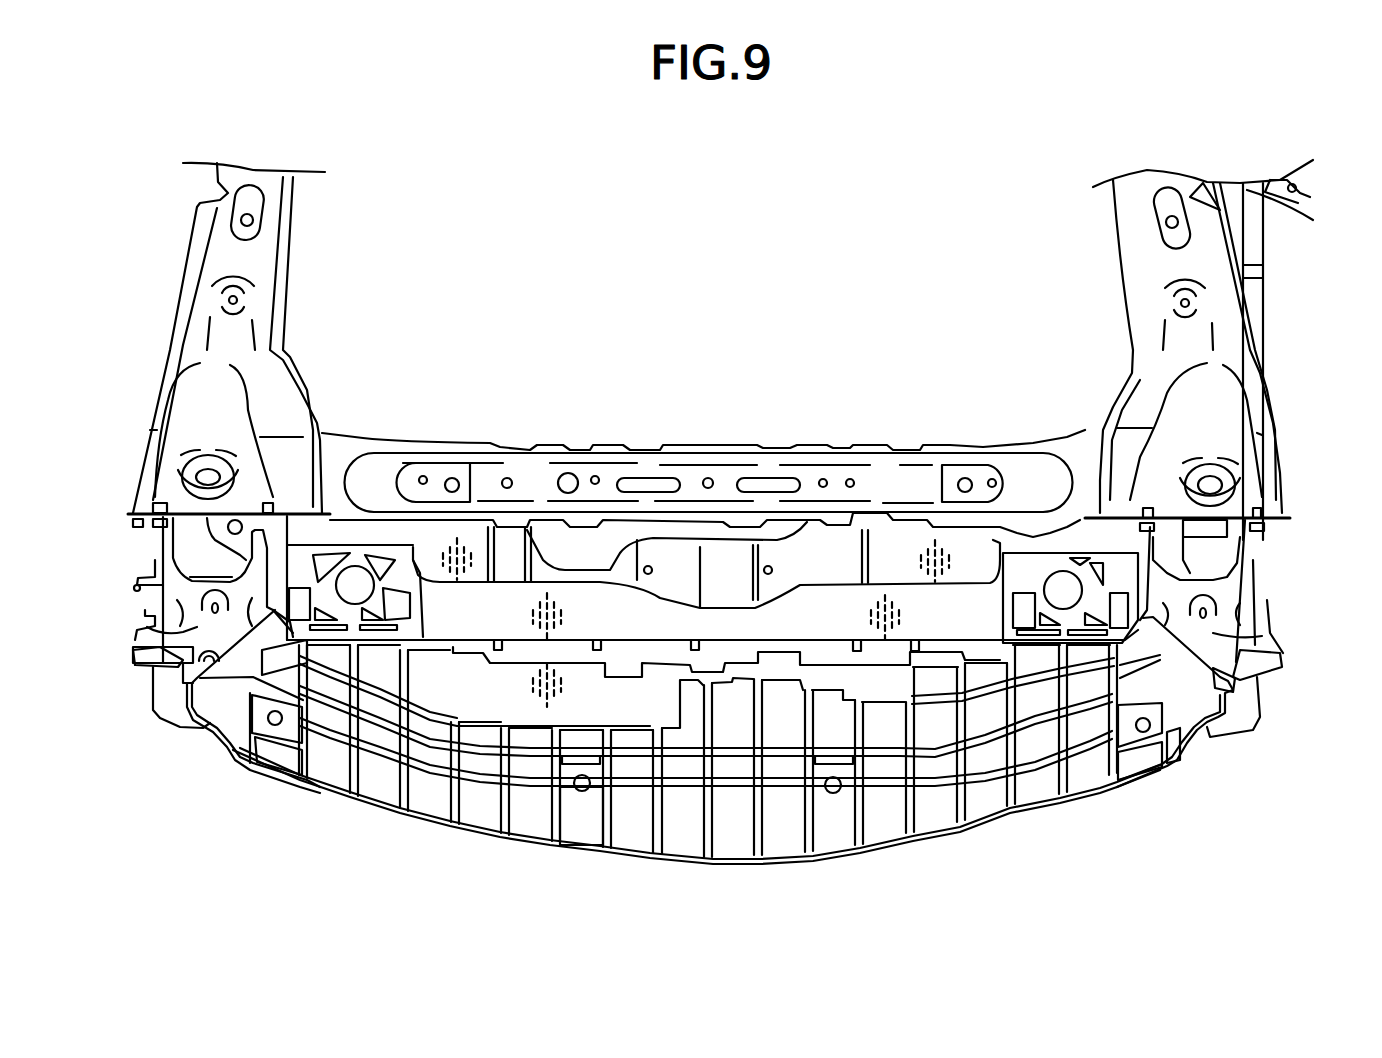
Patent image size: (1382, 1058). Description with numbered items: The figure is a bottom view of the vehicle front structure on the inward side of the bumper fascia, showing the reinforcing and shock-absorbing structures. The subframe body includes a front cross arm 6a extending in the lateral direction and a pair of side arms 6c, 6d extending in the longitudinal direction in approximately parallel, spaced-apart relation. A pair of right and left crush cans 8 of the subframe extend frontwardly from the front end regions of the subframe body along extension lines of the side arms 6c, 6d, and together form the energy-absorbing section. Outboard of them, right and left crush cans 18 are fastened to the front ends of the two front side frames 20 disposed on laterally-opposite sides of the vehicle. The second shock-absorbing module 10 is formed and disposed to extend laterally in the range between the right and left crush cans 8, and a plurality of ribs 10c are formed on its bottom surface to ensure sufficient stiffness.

The front cross arm 6a is at (770, 462).
The side arm 6c is at (230, 250).
The side arm 6d is at (1203, 255).
The crush can 8 is at (190, 627).
The second shock-absorbing module 10 is at (738, 832).
The rib 10c is at (547, 822).
The crush can 18 is at (150, 638).
The front side frame 20 is at (1257, 327).